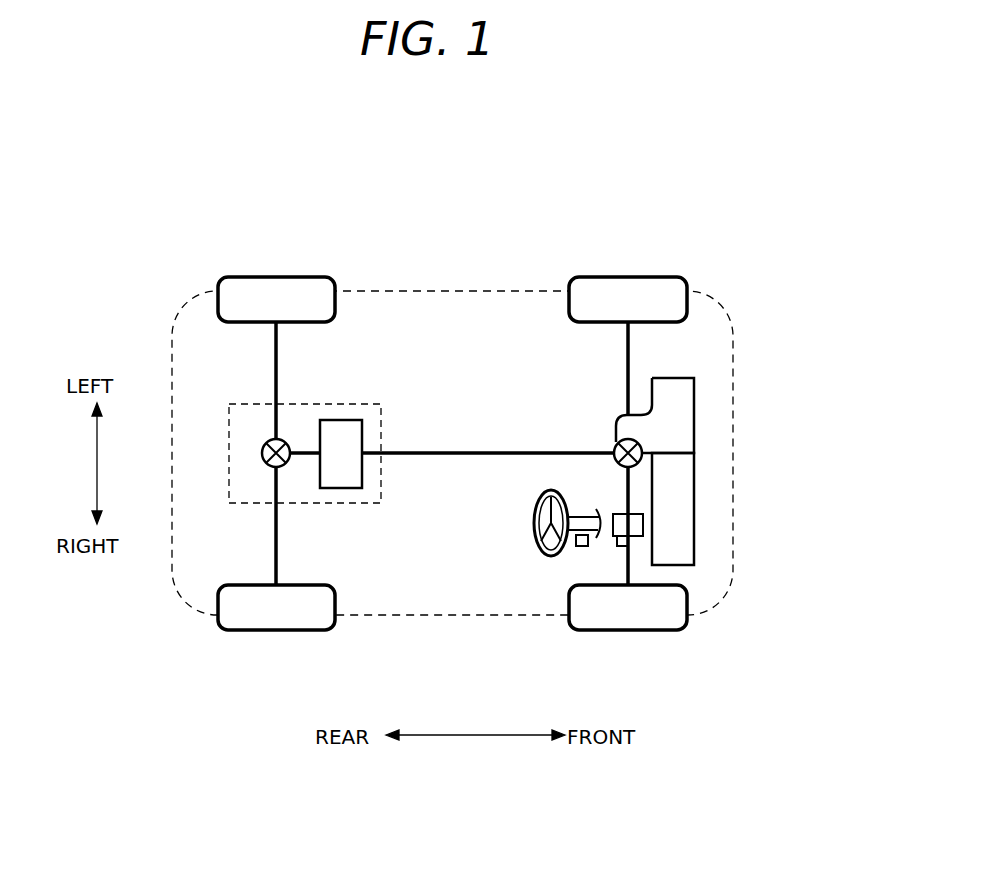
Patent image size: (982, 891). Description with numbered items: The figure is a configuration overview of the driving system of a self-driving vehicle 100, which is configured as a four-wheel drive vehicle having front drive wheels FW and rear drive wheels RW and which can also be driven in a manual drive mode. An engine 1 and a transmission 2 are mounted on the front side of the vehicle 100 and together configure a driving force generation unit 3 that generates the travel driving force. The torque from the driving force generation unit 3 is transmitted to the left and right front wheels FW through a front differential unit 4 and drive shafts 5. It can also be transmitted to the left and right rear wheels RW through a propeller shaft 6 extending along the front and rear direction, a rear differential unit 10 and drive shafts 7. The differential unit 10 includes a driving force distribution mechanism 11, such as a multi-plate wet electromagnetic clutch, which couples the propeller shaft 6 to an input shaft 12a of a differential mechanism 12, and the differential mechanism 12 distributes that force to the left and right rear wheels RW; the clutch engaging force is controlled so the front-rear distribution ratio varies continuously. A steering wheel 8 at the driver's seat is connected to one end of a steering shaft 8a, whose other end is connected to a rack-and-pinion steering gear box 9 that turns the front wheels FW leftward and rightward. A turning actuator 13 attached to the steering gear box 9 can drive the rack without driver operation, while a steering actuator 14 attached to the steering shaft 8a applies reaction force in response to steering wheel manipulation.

The self-driving vehicle 100 is at (634, 201).
The rear drive wheels RW is at (247, 277).
The front drive wheels FW is at (647, 277).
The engine 1 is at (694, 513).
The transmission 2 is at (694, 415).
The driving force generation unit 3 is at (778, 400).
The front differential unit 4 is at (613, 432).
The drive shafts 5 is at (626, 356).
The propeller shaft 6 is at (471, 456).
The drive shafts 7 is at (275, 375).
The steering wheel 8 is at (534, 530).
The steering shaft 8a is at (582, 517).
The steering gear box 9 is at (644, 525).
The rear differential unit 10 is at (375, 404).
The driving force distribution mechanism 11 is at (342, 420).
The differential mechanism 12 is at (262, 452).
The input shaft 12a is at (303, 456).
The turning actuator 13 is at (621, 547).
The steering actuator 14 is at (580, 547).